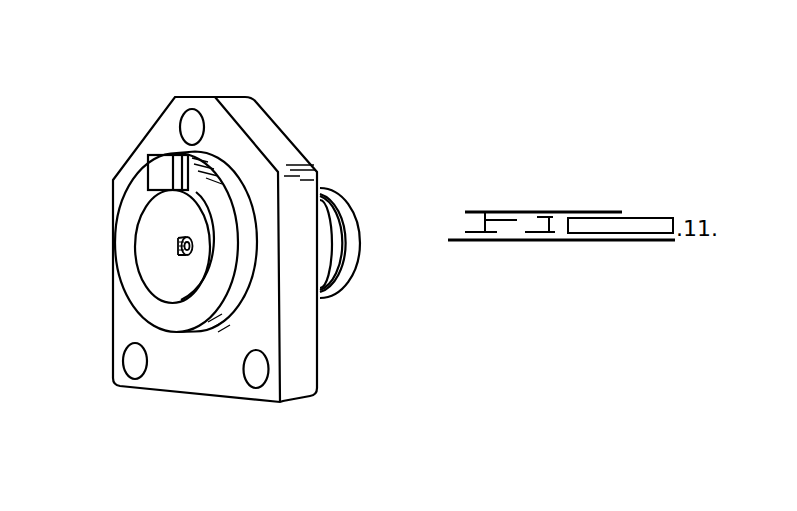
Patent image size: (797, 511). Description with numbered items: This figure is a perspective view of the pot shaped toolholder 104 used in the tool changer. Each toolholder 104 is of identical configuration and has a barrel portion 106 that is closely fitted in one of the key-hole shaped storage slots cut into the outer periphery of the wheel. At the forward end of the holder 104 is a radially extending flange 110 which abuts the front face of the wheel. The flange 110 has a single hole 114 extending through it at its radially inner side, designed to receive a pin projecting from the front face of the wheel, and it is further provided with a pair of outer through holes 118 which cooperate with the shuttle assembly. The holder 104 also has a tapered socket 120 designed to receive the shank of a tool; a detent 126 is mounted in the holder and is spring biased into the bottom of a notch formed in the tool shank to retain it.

The toolholder 104 is at (237, 191).
The barrel portion 106 is at (374, 243).
The flange 110 is at (215, 278).
The hole 114 is at (209, 90).
The outer through holes 118 is at (178, 402).
The tapered socket 120 is at (125, 246).
The detent 126 is at (126, 272).